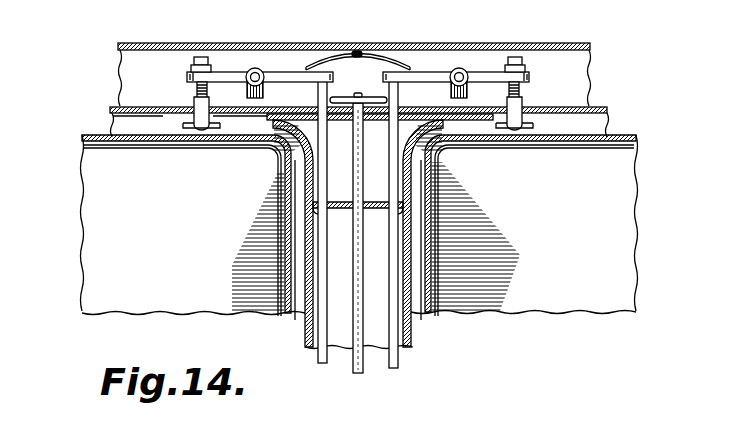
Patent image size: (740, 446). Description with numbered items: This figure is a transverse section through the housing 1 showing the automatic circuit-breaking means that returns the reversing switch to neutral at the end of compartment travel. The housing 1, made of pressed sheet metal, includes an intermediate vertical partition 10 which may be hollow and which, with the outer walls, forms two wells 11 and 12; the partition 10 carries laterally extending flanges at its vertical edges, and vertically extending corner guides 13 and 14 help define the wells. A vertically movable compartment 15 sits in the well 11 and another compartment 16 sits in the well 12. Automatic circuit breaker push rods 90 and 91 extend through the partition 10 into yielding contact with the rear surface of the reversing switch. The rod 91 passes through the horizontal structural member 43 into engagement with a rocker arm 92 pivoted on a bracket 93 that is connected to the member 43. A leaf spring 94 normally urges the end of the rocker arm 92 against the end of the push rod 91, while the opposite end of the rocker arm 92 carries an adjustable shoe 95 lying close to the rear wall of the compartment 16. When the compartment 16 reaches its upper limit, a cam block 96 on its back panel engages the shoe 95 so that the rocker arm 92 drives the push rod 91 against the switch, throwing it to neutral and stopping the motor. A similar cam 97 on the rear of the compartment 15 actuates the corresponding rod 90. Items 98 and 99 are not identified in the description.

The housing 1 is at (557, 29).
The intermediate vertical partition 10 is at (348, 211).
The well 11 is at (122, 123).
The well 12 is at (606, 132).
The corner guide 13 is at (302, 151).
The corner guide 14 is at (400, 152).
The compartment 15 is at (106, 215).
The compartment 16 is at (619, 193).
The horizontal structural member 43 is at (592, 111).
The automatic circuit breaker push rod 90 is at (320, 359).
The automatic circuit breaker push rod 91 is at (399, 368).
The rocker arm 92 is at (282, 72).
The bracket 93 is at (243, 80).
The leaf spring 94 is at (366, 58).
The adjustable shoe 95 is at (196, 100).
The cam block 96 is at (532, 130).
The cam 97 is at (186, 127).
The handle 98 is at (372, 97).
The actuating rod 99 is at (358, 375).